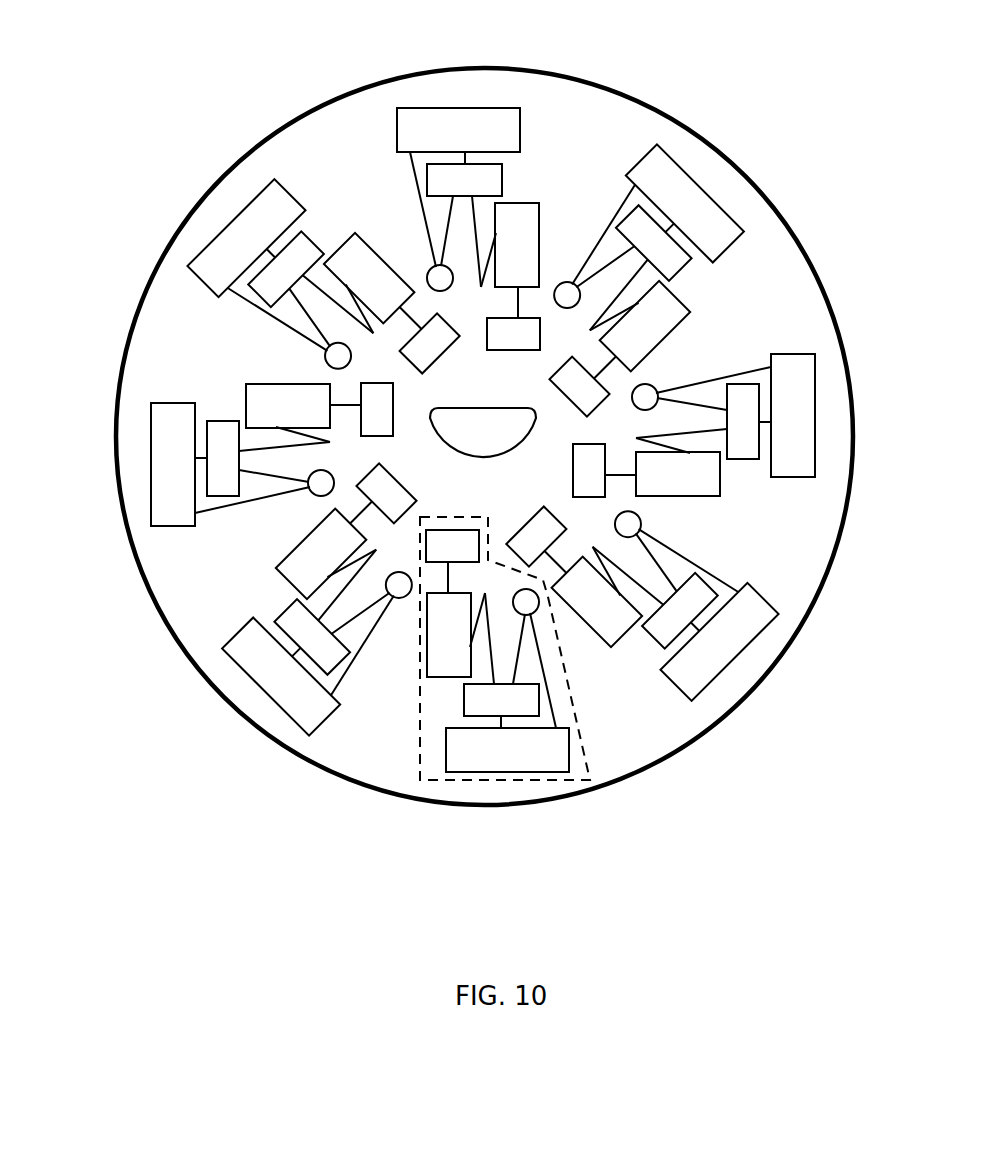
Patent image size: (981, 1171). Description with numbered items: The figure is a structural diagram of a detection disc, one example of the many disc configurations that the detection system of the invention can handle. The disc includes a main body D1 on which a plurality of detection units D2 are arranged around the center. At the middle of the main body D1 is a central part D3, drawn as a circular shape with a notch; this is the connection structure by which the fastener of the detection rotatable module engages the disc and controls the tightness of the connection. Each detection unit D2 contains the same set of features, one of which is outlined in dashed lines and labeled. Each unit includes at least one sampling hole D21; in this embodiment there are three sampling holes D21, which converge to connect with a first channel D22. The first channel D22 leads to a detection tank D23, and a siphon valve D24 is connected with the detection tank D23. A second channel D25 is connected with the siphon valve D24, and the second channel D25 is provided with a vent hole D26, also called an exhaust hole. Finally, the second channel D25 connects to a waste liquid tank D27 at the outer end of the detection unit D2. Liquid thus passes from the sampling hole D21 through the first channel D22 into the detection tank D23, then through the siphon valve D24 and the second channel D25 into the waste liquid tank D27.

The main body D1 is at (343, 112).
The detection unit D2 is at (420, 525).
The central part D3 is at (492, 447).
The sampling hole D21 is at (455, 545).
The first channel D22 is at (448, 577).
The detection tank D23 is at (452, 623).
The siphon valve D24 is at (488, 647).
The second channel D25 is at (520, 660).
The vent hole D26 is at (527, 600).
The waste liquid tank D27 is at (463, 745).